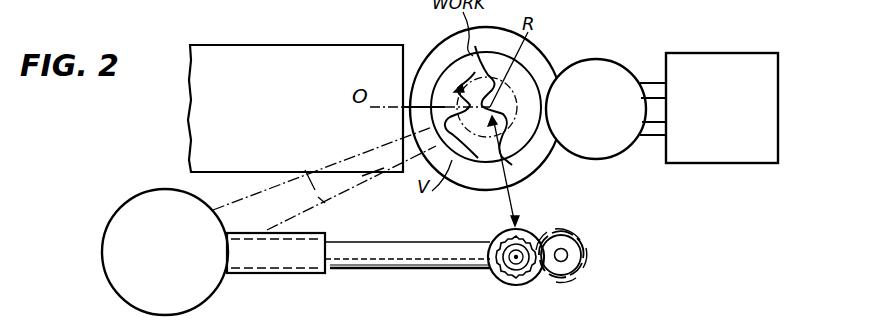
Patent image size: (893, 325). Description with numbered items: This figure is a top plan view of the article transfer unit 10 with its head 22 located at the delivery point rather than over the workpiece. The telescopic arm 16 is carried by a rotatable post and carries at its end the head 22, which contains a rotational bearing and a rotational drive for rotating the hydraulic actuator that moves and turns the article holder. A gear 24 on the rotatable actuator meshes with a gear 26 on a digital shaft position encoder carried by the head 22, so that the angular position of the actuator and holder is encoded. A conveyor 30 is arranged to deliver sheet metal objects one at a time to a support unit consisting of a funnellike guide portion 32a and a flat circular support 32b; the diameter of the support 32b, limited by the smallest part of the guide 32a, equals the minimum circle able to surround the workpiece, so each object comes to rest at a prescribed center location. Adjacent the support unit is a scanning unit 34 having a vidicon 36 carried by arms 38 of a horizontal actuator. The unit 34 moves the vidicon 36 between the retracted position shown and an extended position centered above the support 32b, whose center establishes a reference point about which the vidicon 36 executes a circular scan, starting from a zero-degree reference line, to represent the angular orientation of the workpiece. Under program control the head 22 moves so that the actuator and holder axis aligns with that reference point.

The article transfer unit 10 is at (603, 250).
The telescopic arm 16 is at (338, 274).
The head 22 is at (516, 285).
The gear 24 is at (511, 228).
The gear 26 is at (575, 233).
The conveyor 30 is at (282, 114).
The funnellike guide portion 32a is at (541, 70).
The flat circular support 32b is at (528, 132).
The scanning unit 34 is at (727, 60).
The vidicon 36 is at (617, 67).
The arms 38 is at (658, 137).